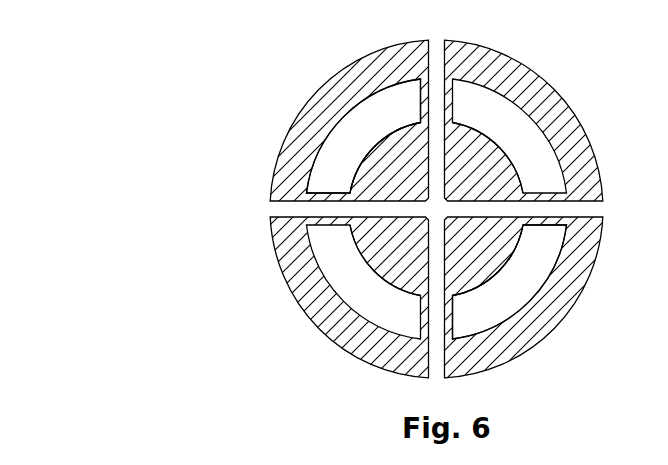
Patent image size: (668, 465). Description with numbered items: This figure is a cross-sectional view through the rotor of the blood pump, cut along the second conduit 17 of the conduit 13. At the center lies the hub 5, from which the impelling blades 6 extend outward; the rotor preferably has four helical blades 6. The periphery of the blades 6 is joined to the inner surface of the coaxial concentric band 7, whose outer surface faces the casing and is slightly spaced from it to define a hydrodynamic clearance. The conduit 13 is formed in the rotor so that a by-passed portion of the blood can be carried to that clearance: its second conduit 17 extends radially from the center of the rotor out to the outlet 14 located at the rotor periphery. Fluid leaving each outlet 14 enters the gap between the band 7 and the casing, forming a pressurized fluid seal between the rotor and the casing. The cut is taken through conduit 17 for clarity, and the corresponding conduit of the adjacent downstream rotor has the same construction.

The hub 5 is at (362, 263).
The helical blades 6 is at (313, 193).
The band 7 is at (337, 94).
The conduit 13 is at (440, 205).
The outlet 14 is at (270, 208).
The second conduit 17 is at (477, 214).